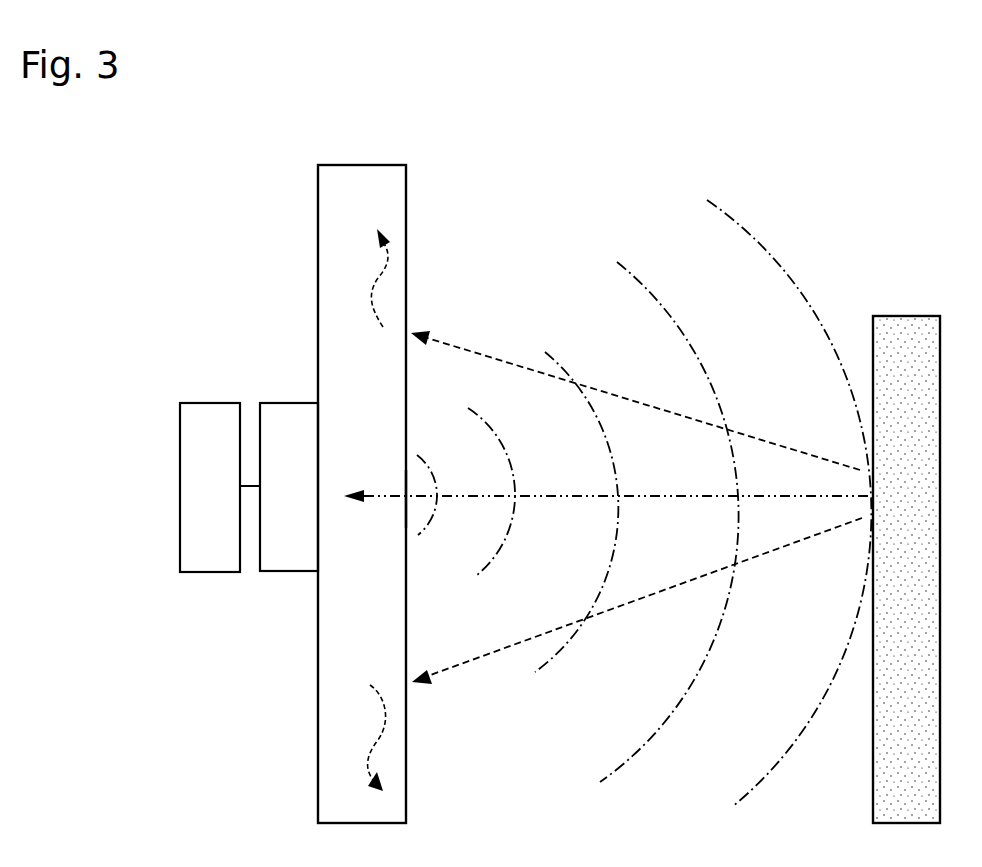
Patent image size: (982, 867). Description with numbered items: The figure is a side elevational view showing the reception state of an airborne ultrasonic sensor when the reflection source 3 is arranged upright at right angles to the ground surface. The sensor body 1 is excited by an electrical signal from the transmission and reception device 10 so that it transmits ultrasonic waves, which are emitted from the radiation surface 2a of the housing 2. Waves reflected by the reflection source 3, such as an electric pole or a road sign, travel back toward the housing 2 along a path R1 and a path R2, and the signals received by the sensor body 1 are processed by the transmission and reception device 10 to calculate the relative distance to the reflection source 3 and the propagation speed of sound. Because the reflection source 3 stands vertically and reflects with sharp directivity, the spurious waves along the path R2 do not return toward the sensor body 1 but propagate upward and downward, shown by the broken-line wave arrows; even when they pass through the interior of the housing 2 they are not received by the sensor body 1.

The sensor body 1 is at (275, 402).
The housing 2 is at (318, 255).
The radiation surface 2a is at (406, 527).
The reflection source 3 is at (908, 316).
The transmission and reception device 10 is at (210, 402).
The path of reflection waves R1 is at (560, 497).
The path of reflection waves R2 is at (493, 357).